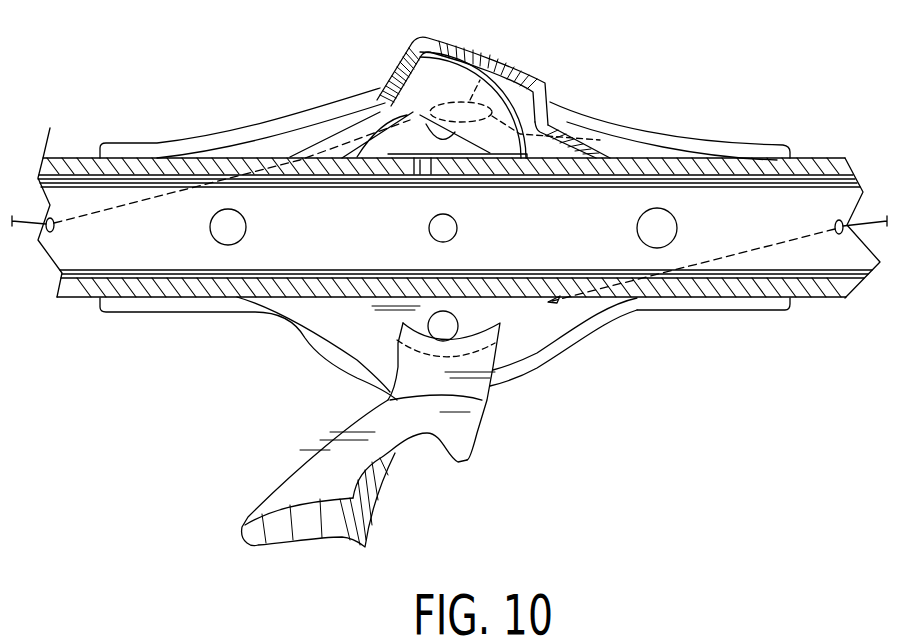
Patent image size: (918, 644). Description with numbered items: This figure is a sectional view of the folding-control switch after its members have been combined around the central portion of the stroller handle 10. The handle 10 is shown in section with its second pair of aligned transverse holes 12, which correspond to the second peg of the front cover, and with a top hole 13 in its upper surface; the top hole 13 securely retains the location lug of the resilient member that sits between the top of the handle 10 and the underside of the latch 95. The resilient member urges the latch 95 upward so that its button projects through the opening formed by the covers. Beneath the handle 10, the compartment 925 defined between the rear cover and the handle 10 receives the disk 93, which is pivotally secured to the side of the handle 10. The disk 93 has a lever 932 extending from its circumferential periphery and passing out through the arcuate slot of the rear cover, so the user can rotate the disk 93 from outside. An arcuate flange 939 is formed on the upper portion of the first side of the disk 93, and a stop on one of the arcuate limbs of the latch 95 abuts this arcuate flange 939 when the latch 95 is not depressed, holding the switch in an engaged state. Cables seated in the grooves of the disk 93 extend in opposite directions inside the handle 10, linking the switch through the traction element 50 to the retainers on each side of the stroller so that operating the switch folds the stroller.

The handle 10 is at (767, 161).
The second pair of aligned transverse holes 12 is at (241, 226).
The top hole 13 is at (410, 170).
The traction element 50 is at (302, 150).
The disk 93 is at (292, 321).
The latch 95 is at (613, 137).
The compartment 925 is at (485, 64).
The lever 932 is at (427, 434).
The arcuate flange 939 is at (361, 130).